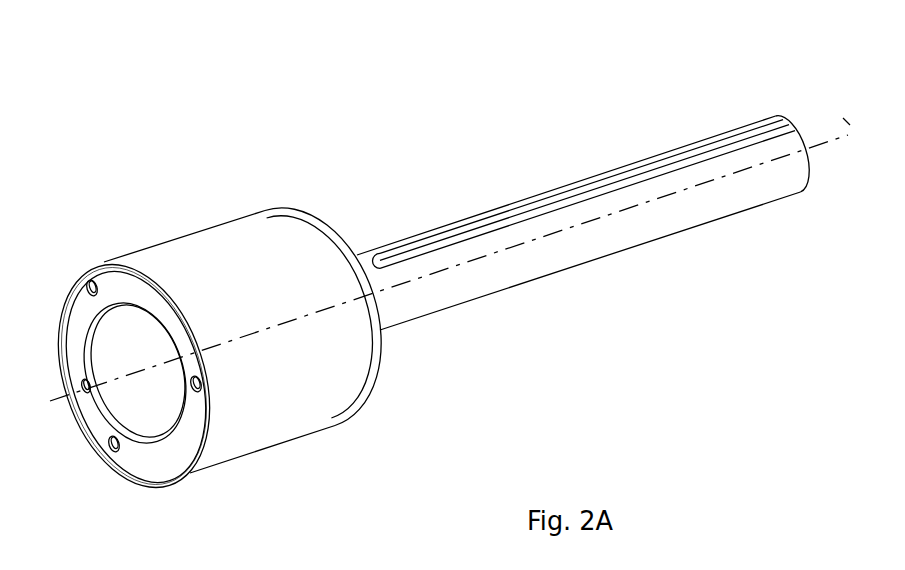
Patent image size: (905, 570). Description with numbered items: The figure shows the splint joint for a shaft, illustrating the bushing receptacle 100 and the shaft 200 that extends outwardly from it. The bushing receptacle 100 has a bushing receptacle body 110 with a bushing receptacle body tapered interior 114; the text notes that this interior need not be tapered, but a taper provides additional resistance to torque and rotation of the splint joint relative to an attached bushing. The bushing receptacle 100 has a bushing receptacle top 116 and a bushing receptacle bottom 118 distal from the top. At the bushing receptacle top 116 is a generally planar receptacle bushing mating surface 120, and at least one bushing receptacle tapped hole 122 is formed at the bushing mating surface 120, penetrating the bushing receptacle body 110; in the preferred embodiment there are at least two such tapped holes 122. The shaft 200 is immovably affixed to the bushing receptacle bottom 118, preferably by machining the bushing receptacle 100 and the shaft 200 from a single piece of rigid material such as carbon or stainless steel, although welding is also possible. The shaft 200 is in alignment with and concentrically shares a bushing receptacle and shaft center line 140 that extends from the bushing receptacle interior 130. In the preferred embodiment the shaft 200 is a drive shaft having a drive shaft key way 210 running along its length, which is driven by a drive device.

The bushing receptacle 100 is at (220, 167).
The bushing receptacle body 110 is at (263, 253).
The bushing receptacle body tapered interior 114 is at (107, 377).
The bushing receptacle top 116 is at (137, 265).
The bushing receptacle bottom 118 is at (340, 240).
The receptacle bushing mating surface 120 is at (147, 297).
The bushing receptacle tapped hole 122 is at (91, 280).
The bushing receptacle interior 130 is at (140, 338).
The bushing receptacle and shaft center line 140 is at (847, 122).
The shaft 200 is at (660, 105).
The drive shaft key way 210 is at (508, 218).